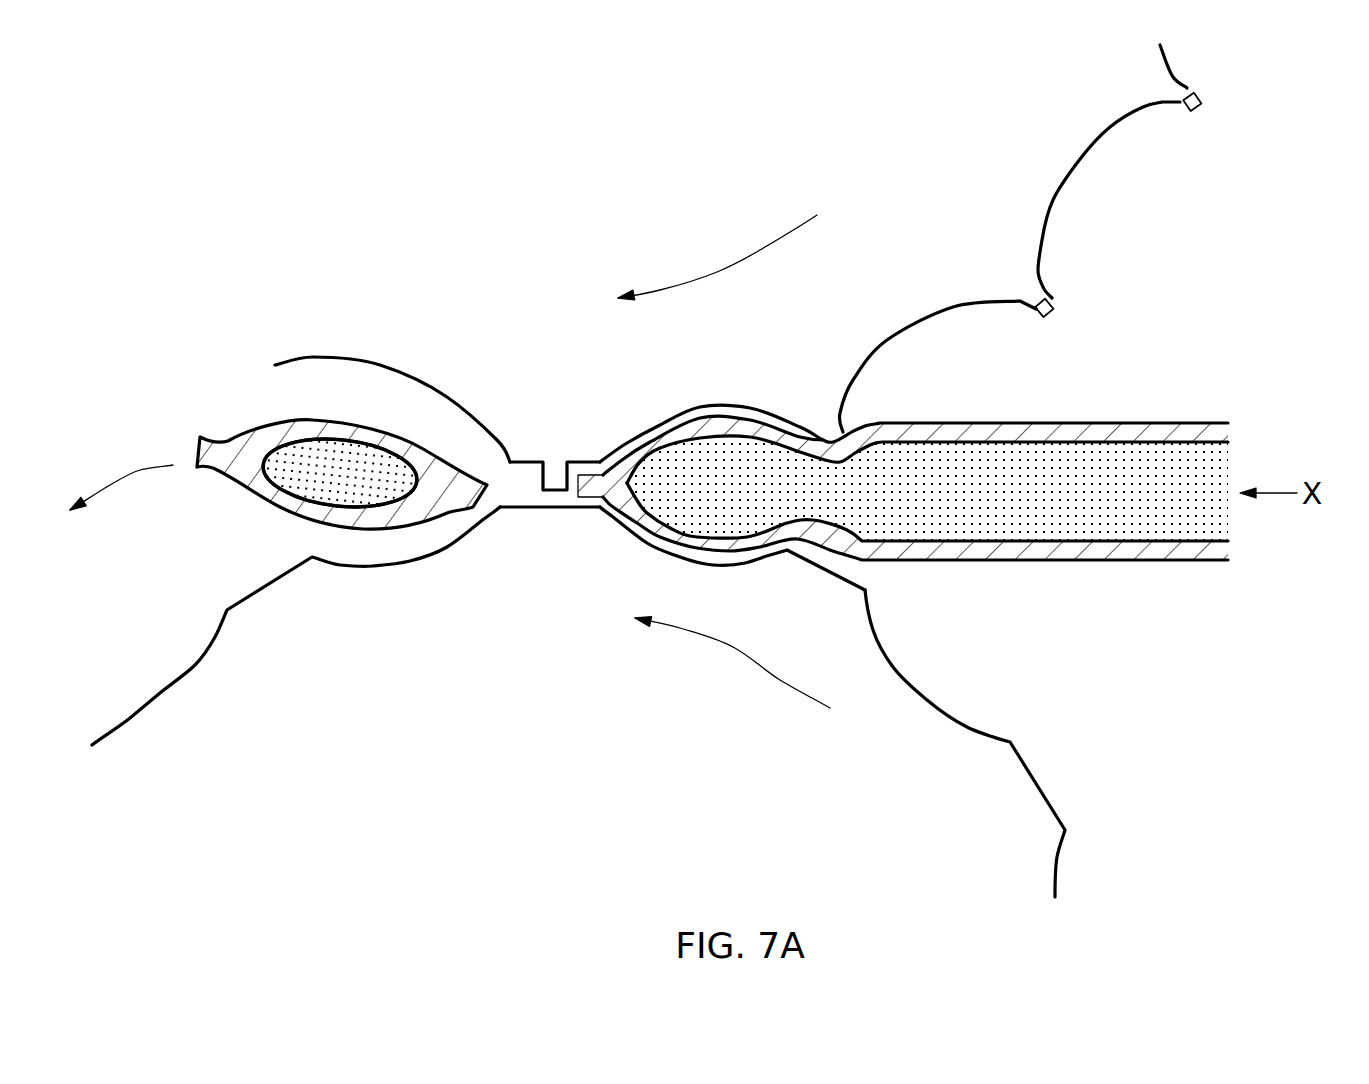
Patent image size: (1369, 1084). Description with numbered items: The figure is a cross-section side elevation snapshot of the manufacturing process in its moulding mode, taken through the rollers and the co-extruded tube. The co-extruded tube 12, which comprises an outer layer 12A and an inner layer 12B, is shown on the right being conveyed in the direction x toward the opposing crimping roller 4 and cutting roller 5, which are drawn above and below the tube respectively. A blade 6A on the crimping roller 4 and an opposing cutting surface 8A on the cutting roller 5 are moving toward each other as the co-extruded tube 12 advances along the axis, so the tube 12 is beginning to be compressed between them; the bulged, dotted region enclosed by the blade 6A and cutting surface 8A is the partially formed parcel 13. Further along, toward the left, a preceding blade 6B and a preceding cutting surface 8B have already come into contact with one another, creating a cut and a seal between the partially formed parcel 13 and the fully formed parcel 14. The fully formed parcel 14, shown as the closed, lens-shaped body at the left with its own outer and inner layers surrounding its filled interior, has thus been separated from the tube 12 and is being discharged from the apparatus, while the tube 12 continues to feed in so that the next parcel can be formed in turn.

The crimping roller 4 is at (723, 270).
The cutting roller 5 is at (733, 648).
The blade 6A is at (818, 397).
The preceding blade 6B is at (551, 436).
The cutting surface 8A is at (818, 585).
The preceding cutting surface 8B is at (552, 522).
The co-extruded tube 12 is at (957, 485).
The outer layer 12A is at (1228, 432).
The inner layer 12B is at (1148, 510).
The partially formed parcel 13 is at (710, 475).
The fully formed parcel 14 is at (292, 460).